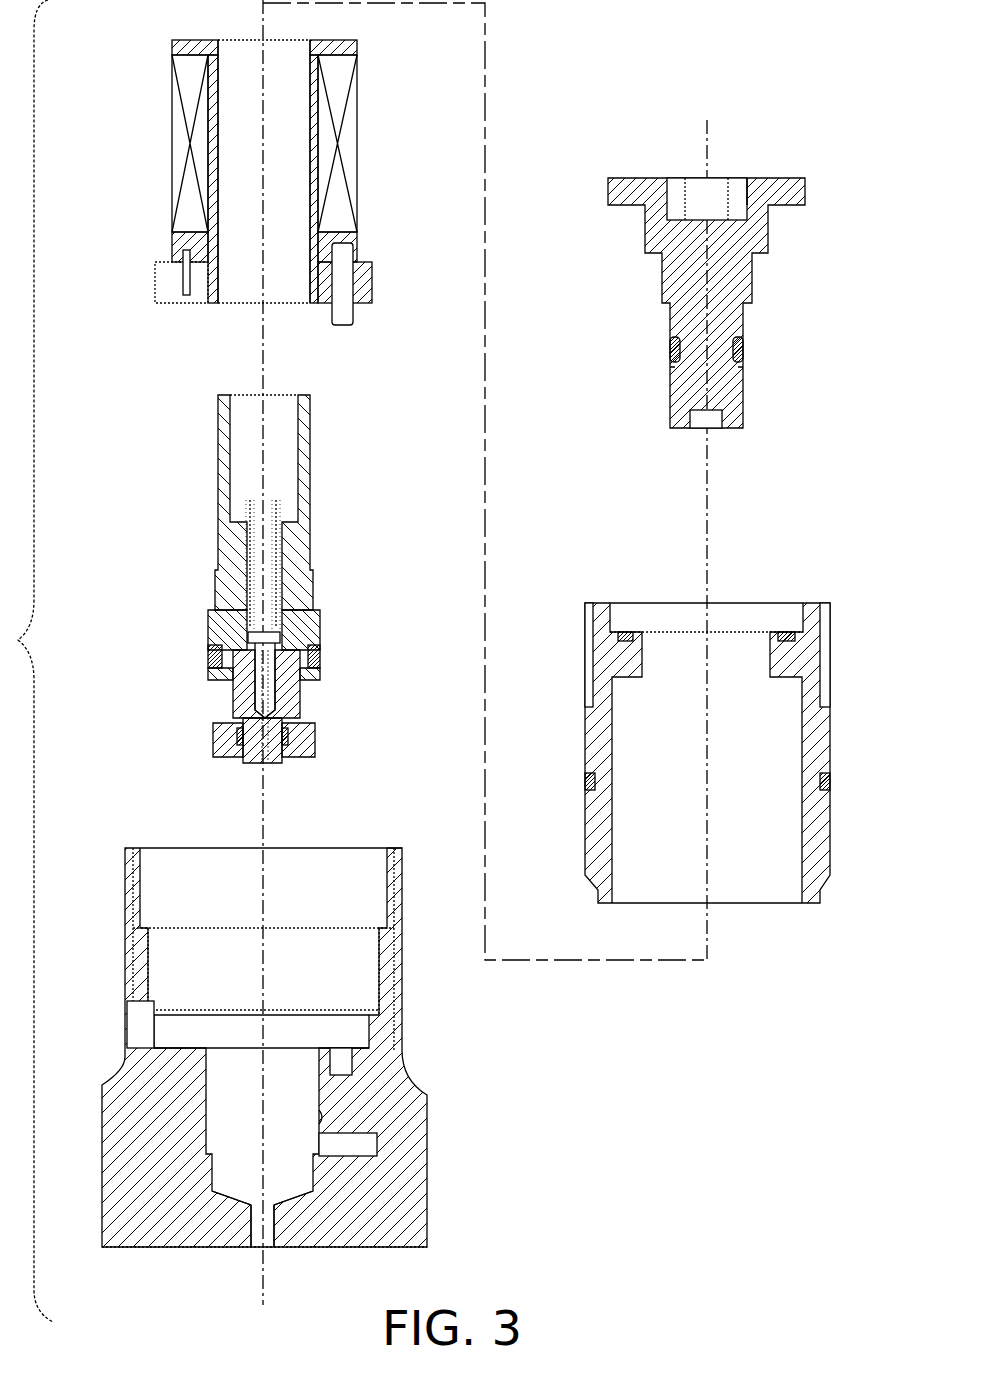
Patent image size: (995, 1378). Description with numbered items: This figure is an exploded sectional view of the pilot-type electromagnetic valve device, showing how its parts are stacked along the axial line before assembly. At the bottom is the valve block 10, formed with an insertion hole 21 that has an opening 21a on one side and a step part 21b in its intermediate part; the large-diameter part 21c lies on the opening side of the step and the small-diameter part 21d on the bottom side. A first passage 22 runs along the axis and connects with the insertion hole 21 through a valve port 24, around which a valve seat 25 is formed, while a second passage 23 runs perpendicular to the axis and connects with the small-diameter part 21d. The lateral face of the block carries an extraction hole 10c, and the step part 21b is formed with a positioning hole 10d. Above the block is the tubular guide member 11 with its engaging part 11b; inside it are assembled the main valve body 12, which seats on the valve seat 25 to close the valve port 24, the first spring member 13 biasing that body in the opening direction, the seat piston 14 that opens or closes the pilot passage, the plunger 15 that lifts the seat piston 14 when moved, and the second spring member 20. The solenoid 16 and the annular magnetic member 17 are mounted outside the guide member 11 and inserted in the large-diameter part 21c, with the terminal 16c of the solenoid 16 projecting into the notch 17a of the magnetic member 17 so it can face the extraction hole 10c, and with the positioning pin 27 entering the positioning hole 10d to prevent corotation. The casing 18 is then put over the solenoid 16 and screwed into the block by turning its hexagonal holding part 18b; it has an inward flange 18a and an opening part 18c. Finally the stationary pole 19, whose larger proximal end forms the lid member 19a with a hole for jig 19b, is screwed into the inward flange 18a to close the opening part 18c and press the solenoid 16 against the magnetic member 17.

The valve block 10 is at (110, 1130).
The extraction hole 10c is at (128, 1005).
The positioning hole 10d is at (345, 1060).
The guide member 11 is at (220, 555).
The engaging part 11b is at (315, 612).
The main valve body 12 is at (235, 700).
The first spring member 13 is at (215, 735).
The seat piston 14 is at (248, 638).
The plunger 15 is at (250, 500).
The solenoid 16 is at (350, 150).
The terminal 16c is at (183, 270).
The magnetic member 17 is at (372, 285).
The notch 17a is at (160, 295).
The casing 18 is at (812, 820).
The inward flange 18a is at (785, 630).
The holding part 18b is at (832, 660).
The opening part 18c is at (620, 612).
The stationary pole 19 is at (745, 290).
The lid member 19a is at (670, 183).
The hole for jig 19b is at (757, 185).
The second spring member 20 is at (276, 500).
The insertion hole 21 is at (395, 905).
The opening 21a is at (395, 845).
The step part 21b is at (372, 1025).
The large-diameter part 21c is at (380, 970).
The small-diameter part 21d is at (325, 1120).
The first passage 22 is at (262, 1250).
The second passage 23 is at (350, 1156).
The valve port 24 is at (276, 1215).
The valve seat 25 is at (240, 1205).
The positioning pin 27 is at (345, 325).